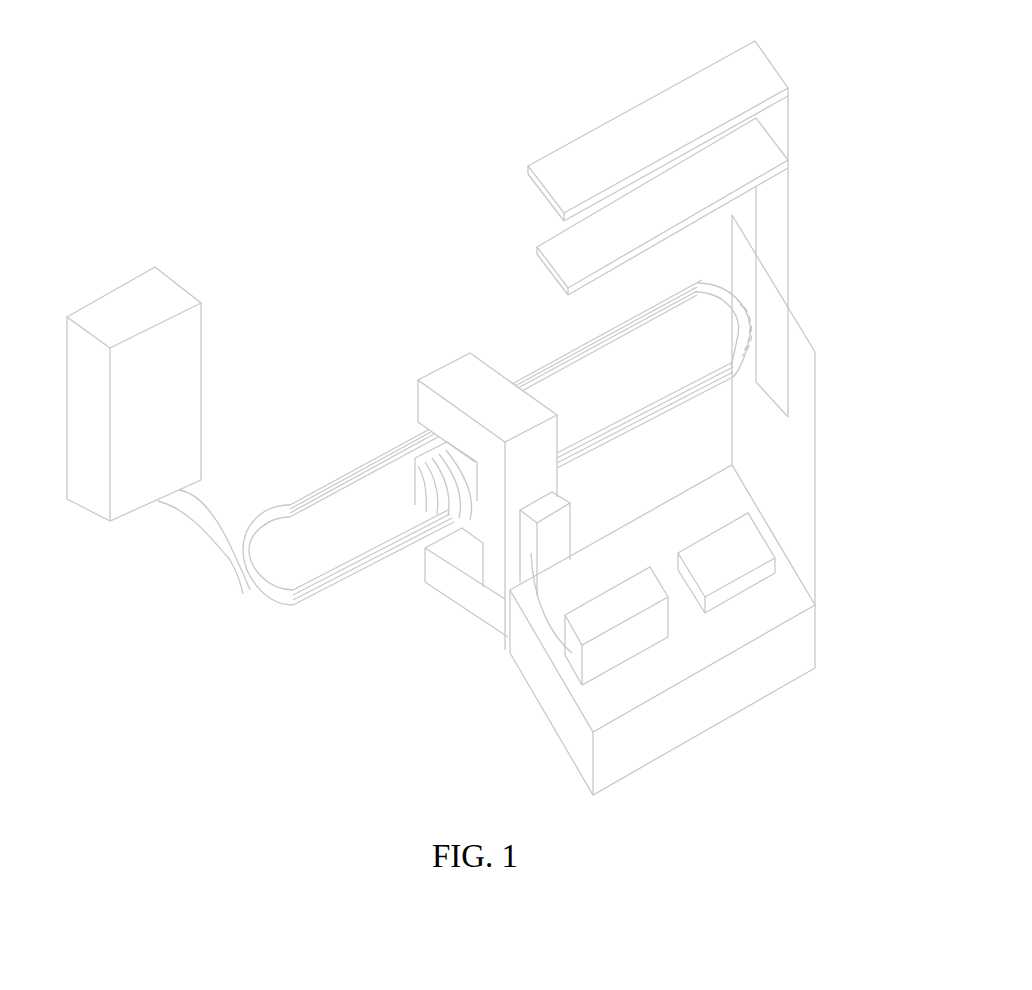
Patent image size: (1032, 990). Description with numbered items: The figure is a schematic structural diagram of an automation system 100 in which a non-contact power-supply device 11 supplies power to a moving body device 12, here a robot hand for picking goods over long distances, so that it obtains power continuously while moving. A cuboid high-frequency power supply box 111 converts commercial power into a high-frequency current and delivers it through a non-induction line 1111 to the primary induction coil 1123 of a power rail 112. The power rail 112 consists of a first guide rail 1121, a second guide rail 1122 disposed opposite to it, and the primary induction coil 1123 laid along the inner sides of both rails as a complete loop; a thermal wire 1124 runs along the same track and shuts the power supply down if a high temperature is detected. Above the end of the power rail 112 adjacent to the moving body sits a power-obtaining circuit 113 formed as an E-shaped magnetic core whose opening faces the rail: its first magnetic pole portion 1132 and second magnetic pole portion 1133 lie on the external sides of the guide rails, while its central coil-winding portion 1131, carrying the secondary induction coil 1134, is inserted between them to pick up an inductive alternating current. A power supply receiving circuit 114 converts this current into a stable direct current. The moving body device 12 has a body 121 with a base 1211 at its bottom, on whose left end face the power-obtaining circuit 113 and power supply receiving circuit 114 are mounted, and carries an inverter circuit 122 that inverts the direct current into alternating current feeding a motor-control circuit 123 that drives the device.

The automation system 100 is at (62, 61).
The non-contact power-supply device 11 is at (294, 266).
The high-frequency power supply box 111 is at (170, 292).
The non-induction line 1111 is at (214, 550).
The power rail 112 is at (524, 352).
The first guide rail 1121 is at (270, 492).
The second guide rail 1122 is at (300, 598).
The primary induction coil 1123 is at (244, 535).
The thermal wire 1124 is at (262, 590).
The power-obtaining circuit 113 is at (466, 350).
The coil-winding portion 1131 is at (432, 471).
The first magnetic pole portion 1132 is at (474, 602).
The second magnetic pole portion 1133 is at (434, 409).
The secondary induction coil 1134 is at (415, 518).
The power supply receiving circuit 114 is at (530, 548).
The moving body device 12 is at (824, 150).
The body 121 is at (820, 440).
The base 1211 is at (808, 658).
The inverter circuit 122 is at (617, 648).
The motor-control circuit 123 is at (740, 551).